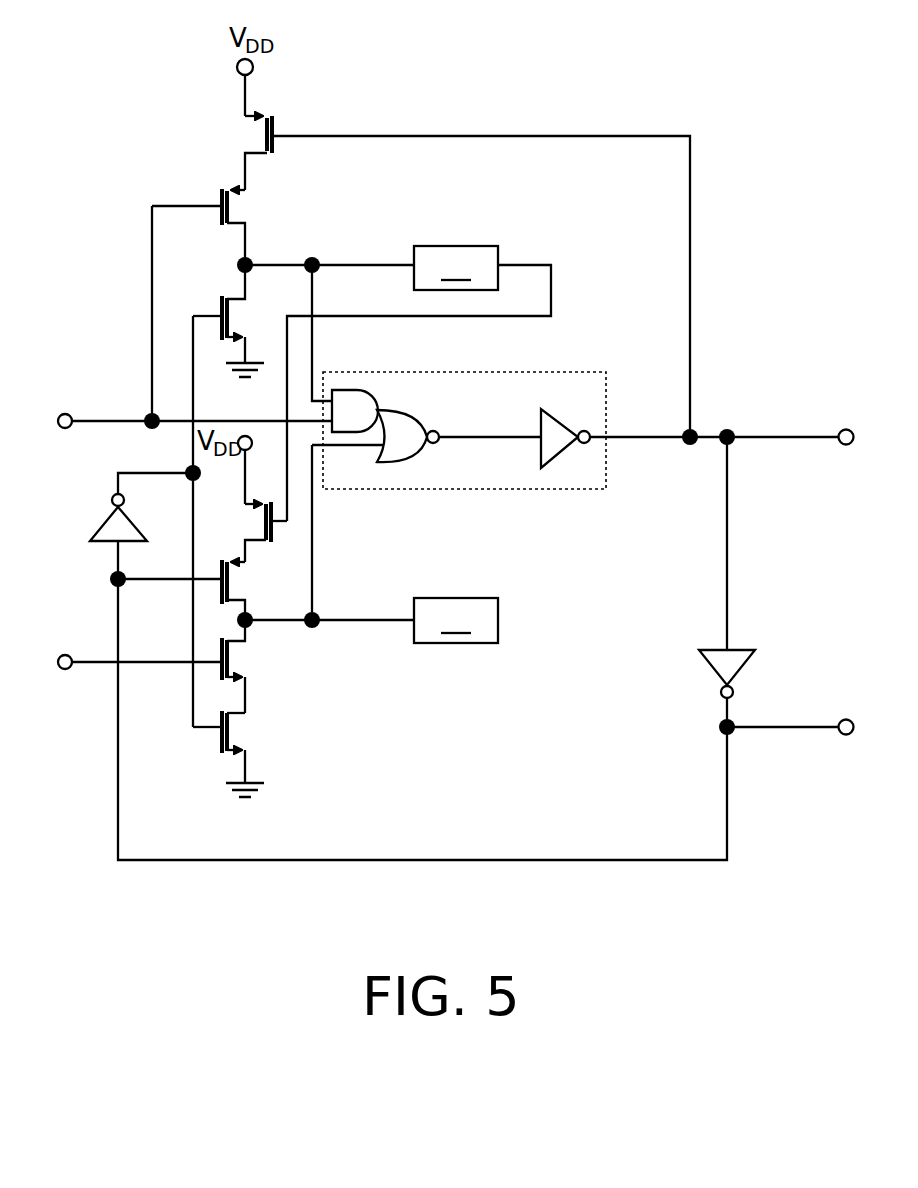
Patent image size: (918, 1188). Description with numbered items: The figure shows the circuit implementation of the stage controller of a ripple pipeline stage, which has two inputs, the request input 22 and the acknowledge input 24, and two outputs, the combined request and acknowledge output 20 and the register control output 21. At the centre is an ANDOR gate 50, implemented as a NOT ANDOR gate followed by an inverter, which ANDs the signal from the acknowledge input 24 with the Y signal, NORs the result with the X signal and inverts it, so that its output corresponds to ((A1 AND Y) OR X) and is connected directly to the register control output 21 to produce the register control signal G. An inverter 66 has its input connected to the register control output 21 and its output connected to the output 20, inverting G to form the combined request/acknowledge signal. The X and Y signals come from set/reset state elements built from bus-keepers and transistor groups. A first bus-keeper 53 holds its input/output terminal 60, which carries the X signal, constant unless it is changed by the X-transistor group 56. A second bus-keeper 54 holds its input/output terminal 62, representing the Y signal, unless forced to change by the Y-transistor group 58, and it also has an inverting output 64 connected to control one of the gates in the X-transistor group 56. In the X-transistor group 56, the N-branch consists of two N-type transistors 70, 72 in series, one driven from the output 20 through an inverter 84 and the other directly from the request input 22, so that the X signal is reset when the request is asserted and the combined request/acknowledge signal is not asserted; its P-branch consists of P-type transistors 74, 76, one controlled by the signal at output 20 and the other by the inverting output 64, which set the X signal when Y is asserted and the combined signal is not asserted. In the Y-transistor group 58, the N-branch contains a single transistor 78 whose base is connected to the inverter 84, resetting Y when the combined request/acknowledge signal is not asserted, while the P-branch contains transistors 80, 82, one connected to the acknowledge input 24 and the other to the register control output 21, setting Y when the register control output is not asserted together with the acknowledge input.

The Y-transistor group 58 is at (100, 84).
The P-type transistor 82 is at (273, 123).
The P-type transistor 80 is at (220, 193).
The N-type transistor 78 is at (222, 308).
The P-type transistor 76 is at (265, 532).
The P-type transistor 74 is at (230, 575).
The N-type transistor 72 is at (228, 650).
The N-type transistor 70 is at (228, 720).
The input/output terminal 62 is at (413, 263).
The inverting output 64 is at (500, 262).
The second bus-keeper 54 is at (456, 268).
The first bus-keeper 53 is at (456, 620).
The input/output terminal 60 is at (412, 622).
The ANDOR gate 50 is at (568, 490).
The X-transistor group 56 is at (176, 702).
The inverter 84 is at (102, 527).
The inverter 66 is at (708, 670).
The acknowledge input 24 is at (65, 412).
The request input 22 is at (65, 653).
The register control output 21 is at (848, 428).
The combined request and acknowledge output 20 is at (849, 718).